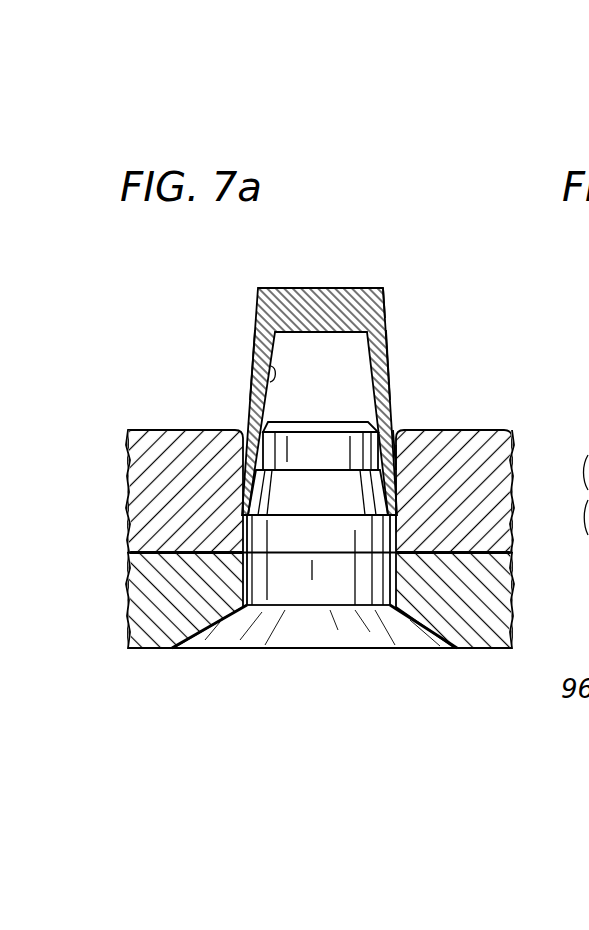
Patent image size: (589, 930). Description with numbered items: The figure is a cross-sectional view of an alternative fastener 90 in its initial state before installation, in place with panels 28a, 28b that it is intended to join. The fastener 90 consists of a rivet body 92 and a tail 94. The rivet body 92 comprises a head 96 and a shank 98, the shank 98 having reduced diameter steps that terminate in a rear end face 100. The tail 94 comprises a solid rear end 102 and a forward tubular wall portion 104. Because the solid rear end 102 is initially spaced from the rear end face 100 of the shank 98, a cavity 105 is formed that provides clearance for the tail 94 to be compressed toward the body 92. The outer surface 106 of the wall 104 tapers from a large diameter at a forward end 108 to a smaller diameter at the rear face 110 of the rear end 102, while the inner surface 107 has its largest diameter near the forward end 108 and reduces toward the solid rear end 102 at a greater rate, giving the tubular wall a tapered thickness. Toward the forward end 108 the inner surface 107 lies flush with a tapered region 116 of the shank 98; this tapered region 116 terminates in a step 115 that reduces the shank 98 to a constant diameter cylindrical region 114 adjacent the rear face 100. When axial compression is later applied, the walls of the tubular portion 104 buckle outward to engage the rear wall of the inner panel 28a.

The fastener 90 is at (414, 264).
The tail 94 is at (250, 294).
The rear face 110 is at (356, 287).
The solid rear end 102 is at (380, 299).
The forward tubular wall portion 104 is at (384, 368).
The cavity 105 is at (300, 345).
The inner surface 107 is at (272, 375).
The outer surface 106 is at (250, 400).
The constant diameter cylindrical region 114 is at (402, 440).
The rear end face 100 is at (312, 420).
The shank 98 is at (330, 501).
The rivet body 92 is at (330, 549).
The head 96 is at (345, 648).
The step 115 is at (398, 452).
The tapered region 116 is at (396, 492).
The forward end 108 is at (398, 522).
The inner panel 28a is at (128, 447).
The lower mold half 28b is at (133, 626).